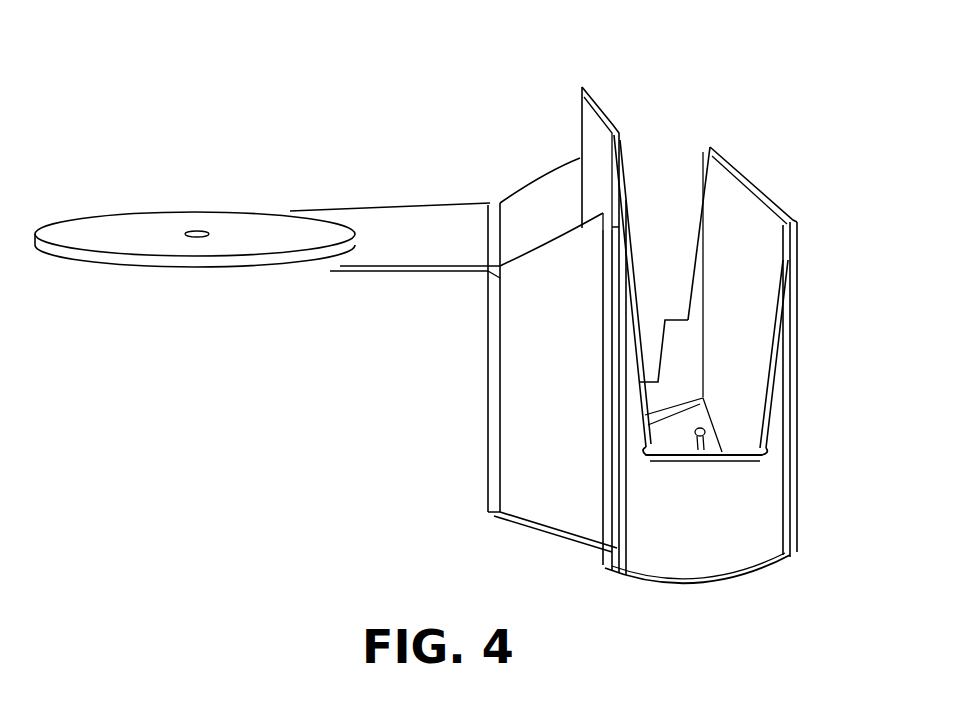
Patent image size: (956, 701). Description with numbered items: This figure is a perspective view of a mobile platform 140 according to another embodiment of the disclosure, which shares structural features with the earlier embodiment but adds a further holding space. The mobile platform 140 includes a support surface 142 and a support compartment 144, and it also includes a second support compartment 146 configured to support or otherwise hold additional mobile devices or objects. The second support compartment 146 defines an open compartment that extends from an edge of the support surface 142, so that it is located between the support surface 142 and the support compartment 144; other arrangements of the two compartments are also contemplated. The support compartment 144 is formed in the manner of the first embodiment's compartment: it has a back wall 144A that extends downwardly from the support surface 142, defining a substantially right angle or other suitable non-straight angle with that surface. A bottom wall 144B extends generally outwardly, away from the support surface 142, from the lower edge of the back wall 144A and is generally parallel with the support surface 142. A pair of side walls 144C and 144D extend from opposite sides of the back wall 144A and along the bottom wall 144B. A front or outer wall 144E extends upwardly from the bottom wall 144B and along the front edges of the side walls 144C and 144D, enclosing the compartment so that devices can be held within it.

The mobile platform 140 is at (775, 60).
The support surface 142 is at (378, 220).
The support compartment 144 is at (661, 145).
The back wall 144A is at (593, 142).
The bottom wall 144B is at (698, 583).
The side wall 144C is at (717, 542).
The side wall 144D is at (684, 319).
The front wall 144E is at (793, 365).
The second support compartment 146 is at (545, 210).